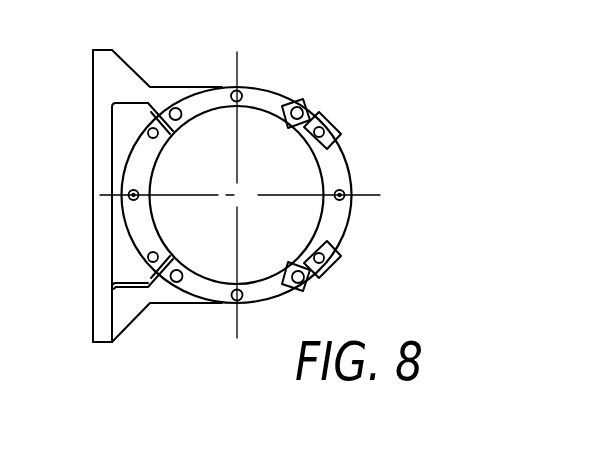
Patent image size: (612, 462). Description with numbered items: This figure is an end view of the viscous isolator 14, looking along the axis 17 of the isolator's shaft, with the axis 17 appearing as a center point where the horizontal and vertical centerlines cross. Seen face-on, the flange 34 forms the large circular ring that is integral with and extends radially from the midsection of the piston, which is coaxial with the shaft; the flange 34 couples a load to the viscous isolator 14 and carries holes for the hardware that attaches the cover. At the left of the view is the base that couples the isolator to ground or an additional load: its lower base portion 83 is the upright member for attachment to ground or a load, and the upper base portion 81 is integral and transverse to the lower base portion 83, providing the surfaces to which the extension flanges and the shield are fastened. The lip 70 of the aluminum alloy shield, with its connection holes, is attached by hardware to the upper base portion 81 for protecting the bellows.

The viscous isolator 14 is at (325, 186).
The axis 17 is at (240, 186).
The flange 34 is at (342, 138).
The lip 70 is at (280, 297).
The upper base portion 81 is at (177, 87).
The lower base portion 83 is at (93, 342).